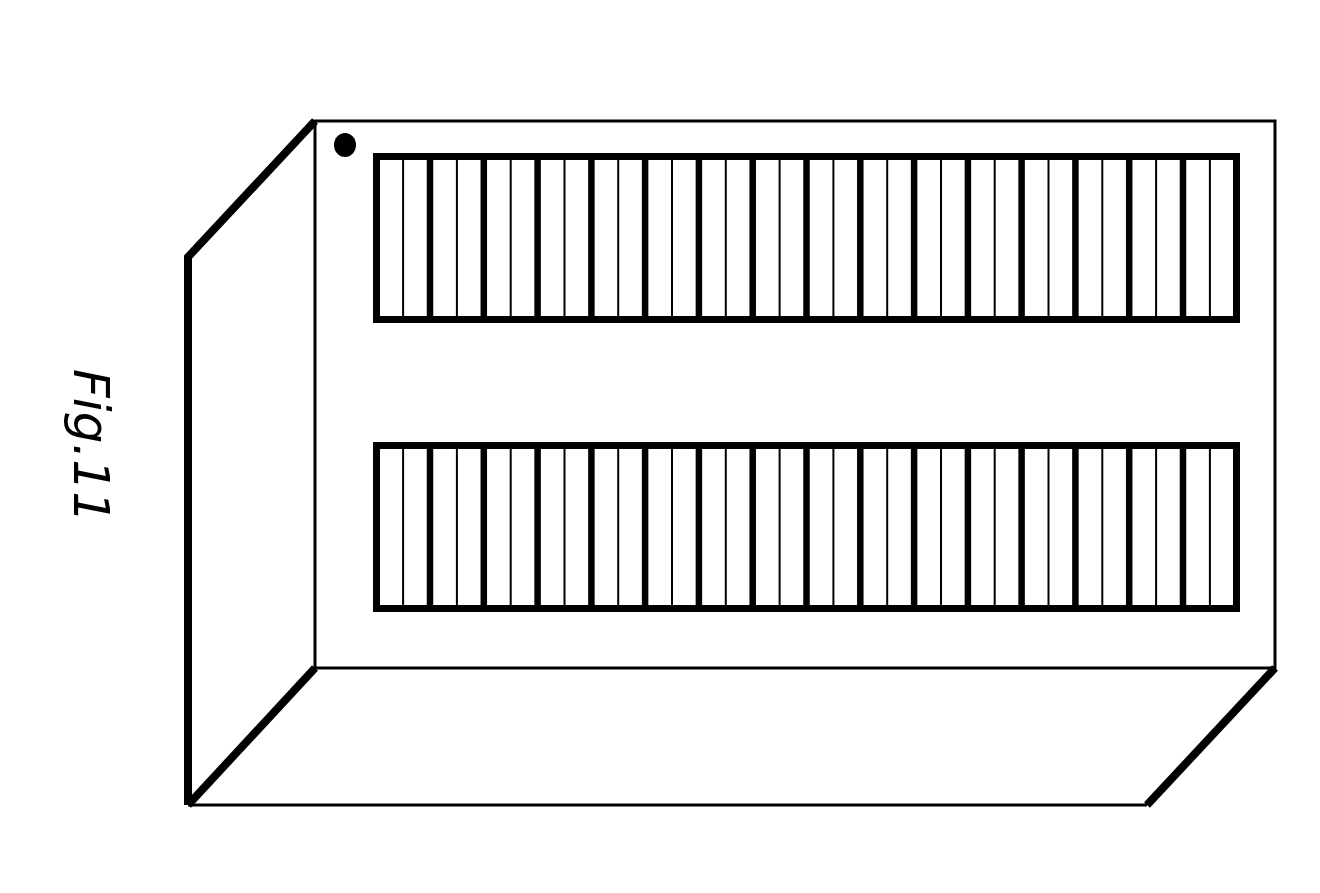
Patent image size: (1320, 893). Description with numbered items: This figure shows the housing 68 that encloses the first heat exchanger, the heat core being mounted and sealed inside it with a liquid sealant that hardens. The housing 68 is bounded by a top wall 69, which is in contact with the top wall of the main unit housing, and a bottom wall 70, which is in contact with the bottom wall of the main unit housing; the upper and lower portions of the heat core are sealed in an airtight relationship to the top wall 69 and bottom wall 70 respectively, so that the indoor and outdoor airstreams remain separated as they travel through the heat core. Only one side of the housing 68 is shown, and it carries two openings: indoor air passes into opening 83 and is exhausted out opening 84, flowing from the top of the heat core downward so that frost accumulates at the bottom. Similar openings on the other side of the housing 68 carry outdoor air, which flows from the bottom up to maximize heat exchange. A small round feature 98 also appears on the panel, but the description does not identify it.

The housing 68 is at (1105, 372).
The top wall 69 is at (1140, 740).
The bottom wall 70 is at (1247, 88).
The opening 83 is at (593, 438).
The opening 84 is at (752, 323).
The indicator light 98 is at (392, 141).